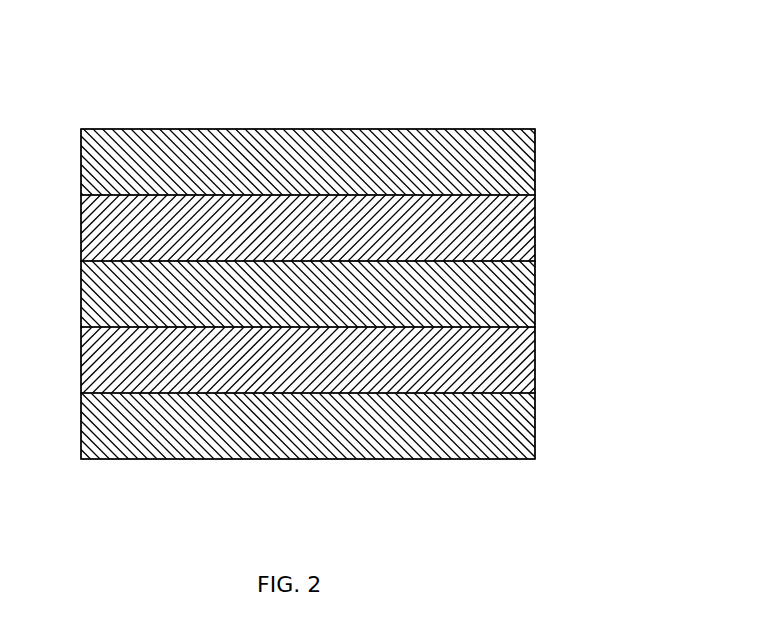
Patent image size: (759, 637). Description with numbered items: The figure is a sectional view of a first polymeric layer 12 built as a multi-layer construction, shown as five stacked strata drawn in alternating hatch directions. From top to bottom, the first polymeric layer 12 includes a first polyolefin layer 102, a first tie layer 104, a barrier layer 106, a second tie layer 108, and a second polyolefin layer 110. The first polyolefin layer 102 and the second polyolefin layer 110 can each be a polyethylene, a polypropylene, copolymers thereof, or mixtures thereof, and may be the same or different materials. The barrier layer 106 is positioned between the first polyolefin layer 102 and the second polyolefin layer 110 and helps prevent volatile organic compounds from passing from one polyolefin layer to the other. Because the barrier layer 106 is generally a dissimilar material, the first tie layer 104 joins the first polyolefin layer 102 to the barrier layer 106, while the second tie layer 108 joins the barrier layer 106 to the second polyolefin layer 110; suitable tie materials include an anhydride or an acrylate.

The first polymeric layer 12 is at (524, 114).
The first polyolefin layer 102 is at (537, 160).
The first tie layer 104 is at (537, 228).
The barrier layer 106 is at (537, 294).
The second tie layer 108 is at (537, 360).
The second polyolefin layer 110 is at (537, 427).